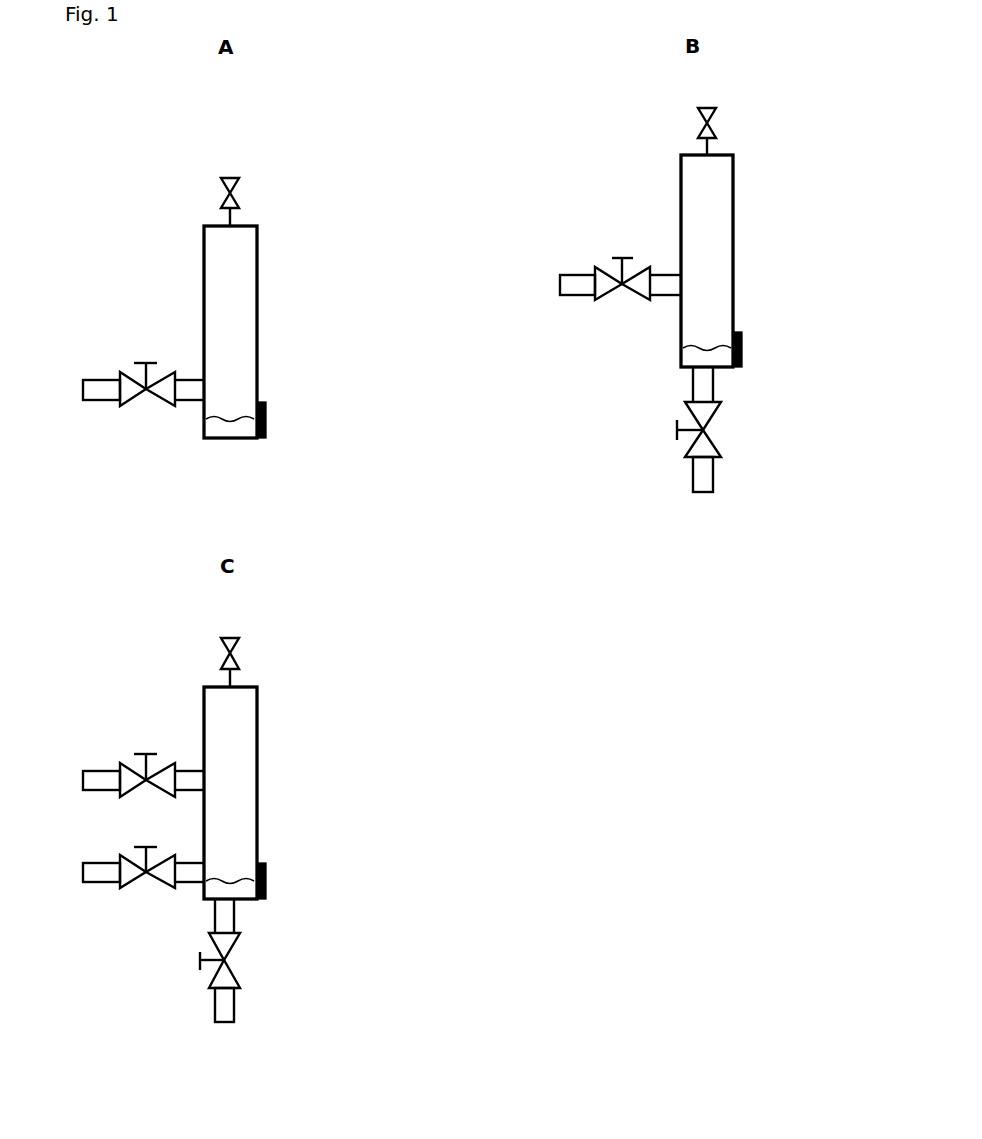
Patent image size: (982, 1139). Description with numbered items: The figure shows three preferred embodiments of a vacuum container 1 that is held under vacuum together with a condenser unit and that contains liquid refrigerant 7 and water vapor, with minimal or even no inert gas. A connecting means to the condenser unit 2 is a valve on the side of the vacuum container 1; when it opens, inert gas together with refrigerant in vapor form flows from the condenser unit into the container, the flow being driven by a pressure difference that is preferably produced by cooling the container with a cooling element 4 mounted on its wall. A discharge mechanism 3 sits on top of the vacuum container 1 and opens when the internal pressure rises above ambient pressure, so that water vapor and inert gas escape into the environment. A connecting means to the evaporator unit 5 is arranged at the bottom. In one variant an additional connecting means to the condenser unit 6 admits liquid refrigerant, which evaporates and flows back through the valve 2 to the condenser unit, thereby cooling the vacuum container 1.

The vacuum container 1 is at (259, 312).
The connecting means to the condenser unit 2 is at (133, 346).
The discharge mechanism 3 is at (205, 190).
The cooling element 4 is at (278, 421).
The connecting means to the evaporator unit 5 is at (665, 422).
The additional connecting means to the condenser unit 6 is at (134, 899).
The liquid refrigerant 7 is at (217, 431).